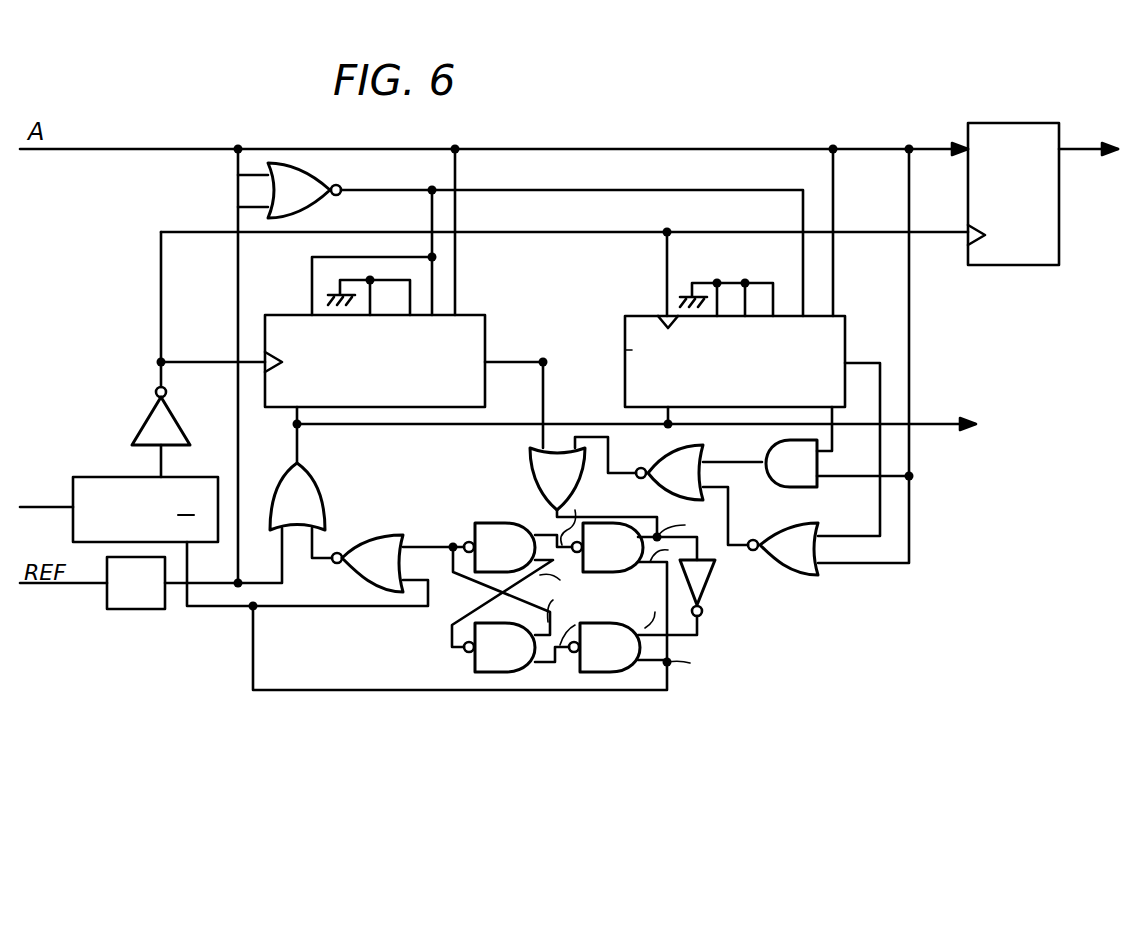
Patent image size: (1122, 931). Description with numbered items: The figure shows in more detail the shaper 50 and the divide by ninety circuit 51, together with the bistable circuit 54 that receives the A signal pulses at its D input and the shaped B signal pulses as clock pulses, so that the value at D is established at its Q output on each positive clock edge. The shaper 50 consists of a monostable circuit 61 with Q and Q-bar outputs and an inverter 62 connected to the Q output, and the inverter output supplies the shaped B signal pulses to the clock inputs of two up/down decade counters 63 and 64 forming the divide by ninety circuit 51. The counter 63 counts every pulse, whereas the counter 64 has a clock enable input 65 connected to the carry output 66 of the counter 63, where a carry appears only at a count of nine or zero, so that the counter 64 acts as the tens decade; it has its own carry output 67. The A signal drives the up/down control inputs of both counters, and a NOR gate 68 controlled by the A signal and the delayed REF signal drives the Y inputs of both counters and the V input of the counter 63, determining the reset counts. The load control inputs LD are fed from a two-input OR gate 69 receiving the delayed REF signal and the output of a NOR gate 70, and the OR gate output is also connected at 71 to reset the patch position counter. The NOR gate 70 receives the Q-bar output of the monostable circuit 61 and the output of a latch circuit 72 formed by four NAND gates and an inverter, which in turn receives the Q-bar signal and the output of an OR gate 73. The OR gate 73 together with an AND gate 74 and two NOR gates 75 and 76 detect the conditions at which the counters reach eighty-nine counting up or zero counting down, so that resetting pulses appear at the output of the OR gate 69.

The shaper 50 is at (125, 455).
The divide by 90 circuit 51 is at (132, 324).
The bistable circuit 54 is at (1022, 265).
The monostable circuit 61 is at (73, 525).
The inverter 62 is at (152, 418).
The up/down decade counter 63 is at (300, 315).
The up/down decade counter 64 is at (658, 316).
The clock enable input 65 is at (610, 342).
The carry output 66 is at (490, 362).
The carry output 67 is at (868, 372).
The NOR gate 68 is at (268, 190).
The OR gate 69 is at (322, 480).
The NOR gate 70 is at (388, 540).
The output connection 71 is at (932, 426).
The latch circuit 72 is at (634, 608).
The OR gate 73 is at (552, 475).
The AND gate 74 is at (798, 488).
The NOR gate 75 is at (800, 575).
The NOR gate 76 is at (663, 457).